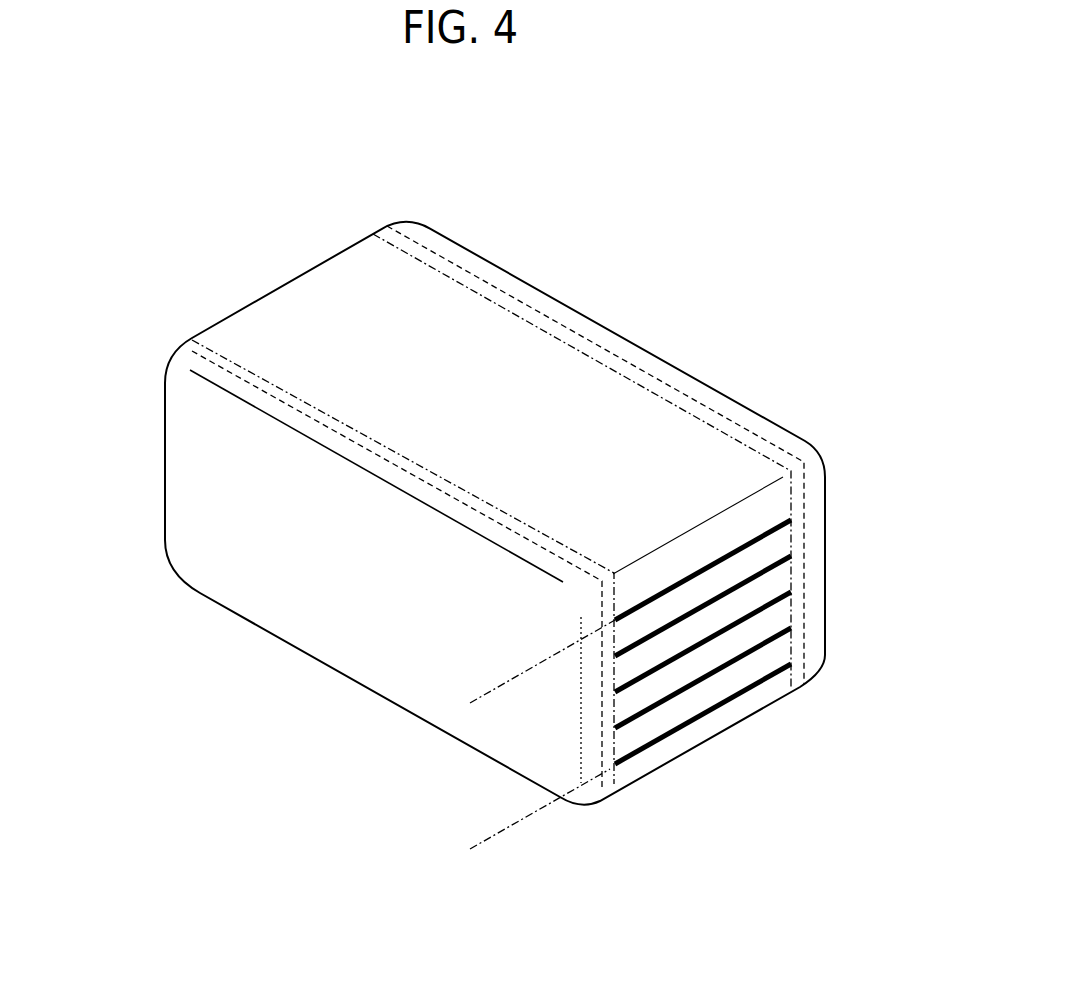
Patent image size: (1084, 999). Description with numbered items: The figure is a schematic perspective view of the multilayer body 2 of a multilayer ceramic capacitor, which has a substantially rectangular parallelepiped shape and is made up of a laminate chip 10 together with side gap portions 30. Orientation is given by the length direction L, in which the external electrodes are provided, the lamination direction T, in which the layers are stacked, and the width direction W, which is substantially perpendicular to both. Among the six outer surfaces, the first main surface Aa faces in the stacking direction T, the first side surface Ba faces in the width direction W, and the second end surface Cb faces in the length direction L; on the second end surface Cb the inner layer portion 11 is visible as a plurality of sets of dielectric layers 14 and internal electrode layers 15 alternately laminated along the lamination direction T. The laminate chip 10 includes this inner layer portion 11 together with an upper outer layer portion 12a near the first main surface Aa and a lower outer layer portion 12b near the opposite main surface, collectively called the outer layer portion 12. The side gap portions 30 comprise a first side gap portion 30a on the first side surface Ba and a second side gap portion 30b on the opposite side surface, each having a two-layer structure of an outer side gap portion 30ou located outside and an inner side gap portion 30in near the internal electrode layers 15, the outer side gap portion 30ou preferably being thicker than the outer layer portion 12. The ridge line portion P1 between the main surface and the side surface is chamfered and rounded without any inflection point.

The multilayer body 2 is at (829, 322).
The laminate chip 10 is at (307, 303).
The inner layer portion 11 is at (659, 687).
The outer layer portion 12 is at (782, 609).
The upper outer layer portion 12a is at (780, 503).
The lower outer layer portion 12b is at (715, 722).
The dielectric layer 14 is at (777, 545).
The internal electrode layer 15 is at (762, 578).
The side gap portion 30 is at (498, 589).
The first side gap portion 30a is at (683, 899).
The second side gap portion 30b is at (797, 291).
The inner side gap portion 30in is at (650, 377).
The outer side gap portion 30ou is at (712, 402).
The first main surface Aa is at (517, 413).
The first side surface Ba is at (390, 593).
The second end surface Cb is at (775, 618).
The ridge line portion P1 is at (597, 322).
The length direction L is at (444, 869).
The lamination direction T is at (932, 470).
The width direction W is at (896, 793).